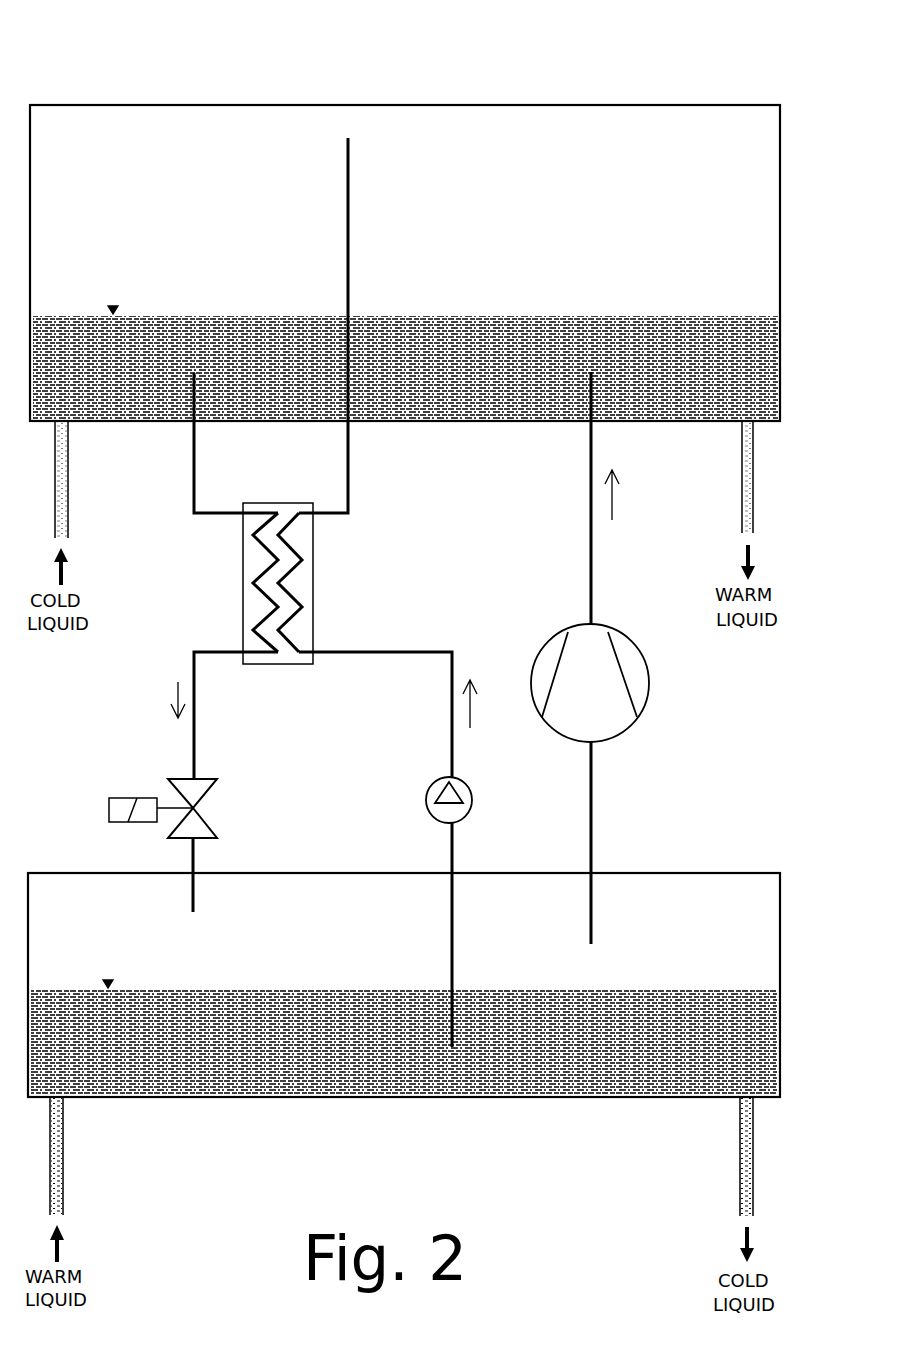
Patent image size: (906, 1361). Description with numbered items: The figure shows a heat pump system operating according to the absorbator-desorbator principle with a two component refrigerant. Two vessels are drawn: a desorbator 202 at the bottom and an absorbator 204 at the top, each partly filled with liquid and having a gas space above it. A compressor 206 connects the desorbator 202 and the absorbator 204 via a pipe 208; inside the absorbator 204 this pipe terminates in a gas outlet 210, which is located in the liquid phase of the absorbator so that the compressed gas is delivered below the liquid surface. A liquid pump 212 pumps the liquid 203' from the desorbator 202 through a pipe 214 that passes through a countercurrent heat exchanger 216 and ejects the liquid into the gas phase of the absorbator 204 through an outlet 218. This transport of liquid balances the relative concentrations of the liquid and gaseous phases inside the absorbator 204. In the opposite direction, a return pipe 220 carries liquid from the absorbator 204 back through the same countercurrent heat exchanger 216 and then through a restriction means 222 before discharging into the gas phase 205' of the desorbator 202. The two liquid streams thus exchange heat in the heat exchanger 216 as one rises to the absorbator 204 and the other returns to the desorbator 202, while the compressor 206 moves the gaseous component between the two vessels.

The desorbator 202 is at (565, 868).
The liquid 203' is at (404, 1081).
The absorbator 204 is at (581, 105).
The gas phase 205' is at (404, 855).
The compressor 206 is at (568, 630).
The pipe 208 is at (593, 567).
The gas outlet 210 is at (591, 372).
The liquid pump 212 is at (427, 795).
The pipe 214 is at (358, 647).
The countercurrent heat exchanger 216 is at (313, 562).
The outlet 218 is at (348, 138).
The return pipe 220 is at (194, 468).
The restriction means 222 is at (200, 802).